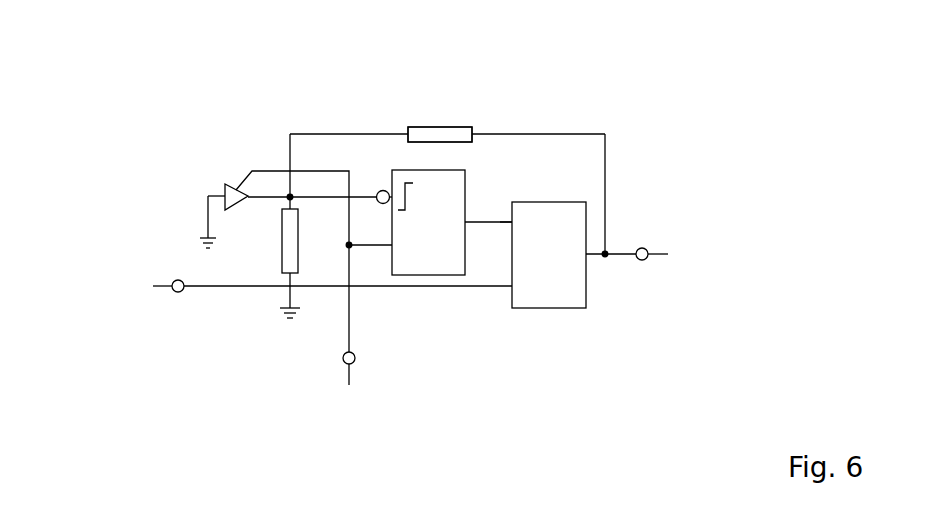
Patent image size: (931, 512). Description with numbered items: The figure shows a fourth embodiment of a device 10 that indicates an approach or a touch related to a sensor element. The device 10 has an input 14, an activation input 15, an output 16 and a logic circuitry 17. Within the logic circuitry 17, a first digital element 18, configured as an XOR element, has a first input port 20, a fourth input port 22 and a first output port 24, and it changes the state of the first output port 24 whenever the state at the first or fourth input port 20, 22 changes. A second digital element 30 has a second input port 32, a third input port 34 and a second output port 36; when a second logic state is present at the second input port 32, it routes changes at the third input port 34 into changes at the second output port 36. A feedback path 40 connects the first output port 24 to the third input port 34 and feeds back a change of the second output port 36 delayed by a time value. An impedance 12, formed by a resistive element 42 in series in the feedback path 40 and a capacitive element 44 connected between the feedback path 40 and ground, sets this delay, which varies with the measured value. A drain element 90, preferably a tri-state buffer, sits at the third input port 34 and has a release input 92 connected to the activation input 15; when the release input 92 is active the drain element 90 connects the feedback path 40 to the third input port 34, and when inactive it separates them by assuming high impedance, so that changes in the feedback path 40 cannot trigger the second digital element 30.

The device 10 is at (202, 82).
The impedance 12 is at (437, 113).
The input 14 is at (167, 290).
The activation input 15 is at (344, 362).
The output 16 is at (648, 260).
The logic circuitry 17 is at (575, 168).
The first digital element 18 is at (530, 308).
The first input port 20 is at (510, 252).
The fourth input port 22 is at (512, 223).
The first output port 24 is at (592, 258).
The second digital element 30 is at (407, 275).
The second input port 32 is at (384, 248).
The third input port 34 is at (382, 190).
The second output port 36 is at (467, 224).
The feedback path 40 is at (607, 202).
The resistive element 42 is at (458, 127).
The capacitive element 44 is at (282, 263).
The drain element 90 is at (226, 185).
The release input 92 is at (240, 188).